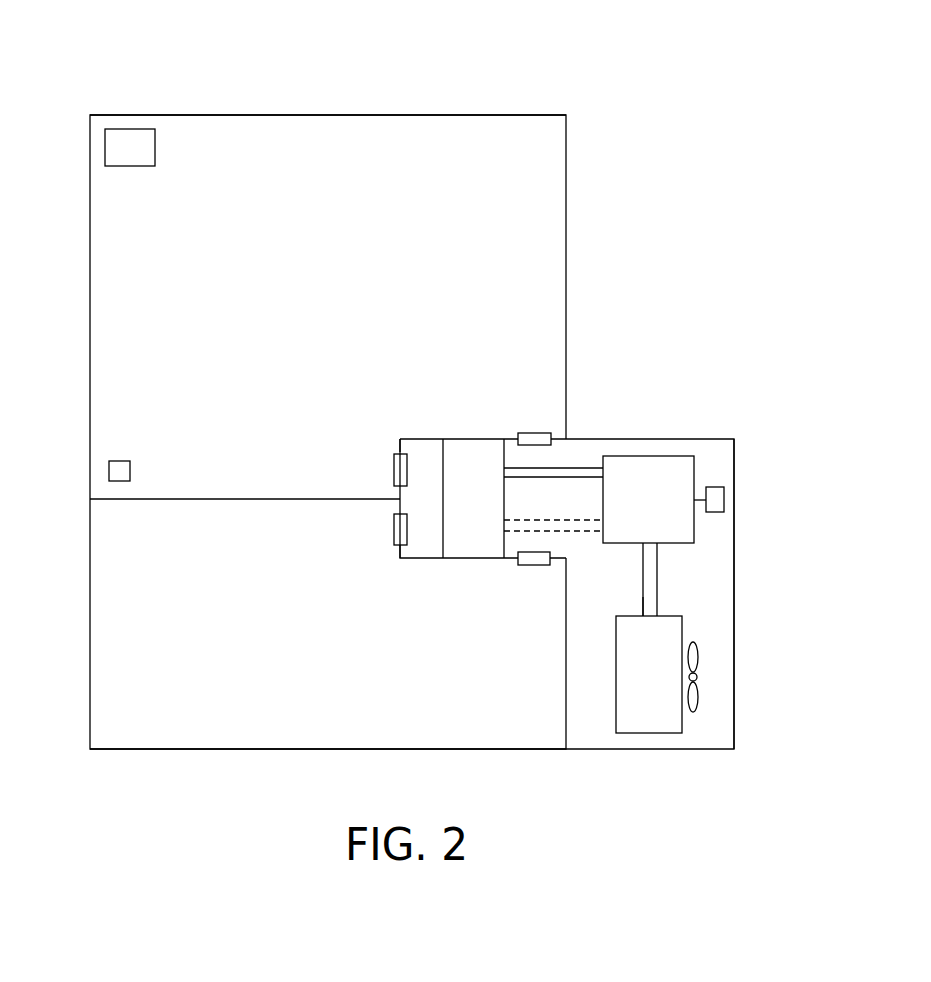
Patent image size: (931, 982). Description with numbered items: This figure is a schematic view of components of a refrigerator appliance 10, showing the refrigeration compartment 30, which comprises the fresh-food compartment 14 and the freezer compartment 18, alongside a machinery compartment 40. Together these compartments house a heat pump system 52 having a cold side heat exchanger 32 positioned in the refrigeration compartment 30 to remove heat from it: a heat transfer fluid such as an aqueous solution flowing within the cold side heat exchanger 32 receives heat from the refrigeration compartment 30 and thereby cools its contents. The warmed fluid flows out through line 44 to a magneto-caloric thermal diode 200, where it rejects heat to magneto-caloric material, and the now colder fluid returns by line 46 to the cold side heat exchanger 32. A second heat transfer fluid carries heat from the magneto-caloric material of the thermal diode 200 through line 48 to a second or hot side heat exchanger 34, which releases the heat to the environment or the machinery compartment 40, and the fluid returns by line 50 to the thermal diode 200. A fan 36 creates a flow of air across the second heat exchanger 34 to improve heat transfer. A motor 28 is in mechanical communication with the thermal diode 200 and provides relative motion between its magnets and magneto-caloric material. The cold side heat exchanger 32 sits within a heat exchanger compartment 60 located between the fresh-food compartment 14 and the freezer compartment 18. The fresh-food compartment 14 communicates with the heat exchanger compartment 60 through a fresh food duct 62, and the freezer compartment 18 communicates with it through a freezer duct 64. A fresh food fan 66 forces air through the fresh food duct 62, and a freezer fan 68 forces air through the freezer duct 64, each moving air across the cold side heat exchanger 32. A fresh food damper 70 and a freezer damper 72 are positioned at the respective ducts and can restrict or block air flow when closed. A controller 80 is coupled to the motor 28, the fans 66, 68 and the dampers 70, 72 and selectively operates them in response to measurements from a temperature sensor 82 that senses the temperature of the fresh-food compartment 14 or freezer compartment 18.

The refrigerator appliance 10 is at (569, 85).
The fresh-food compartment 14 is at (548, 202).
The freezer compartment 18 is at (111, 678).
The refrigeration compartment 30 is at (196, 139).
The controller 80 is at (128, 148).
The temperature sensor 82 is at (120, 461).
The heat exchanger compartment 60 is at (421, 535).
The cold side heat exchanger 32 is at (462, 467).
The fresh food duct 62 is at (397, 451).
The freezer duct 64 is at (395, 546).
The fresh food fan 66 is at (394, 472).
The freezer fan 68 is at (394, 530).
The fresh food damper 70 is at (535, 433).
The freezer damper 72 is at (535, 565).
The line 44 is at (577, 468).
The line 46 is at (543, 478).
The magneto-caloric thermal diode 200 is at (650, 480).
The heat pump system 52 is at (709, 459).
The motor 28 is at (716, 500).
The machinery compartment 40 is at (711, 574).
The line 50 is at (657, 605).
The line 48 is at (643, 597).
The second heat exchanger 34 is at (652, 717).
The fan 36 is at (700, 677).